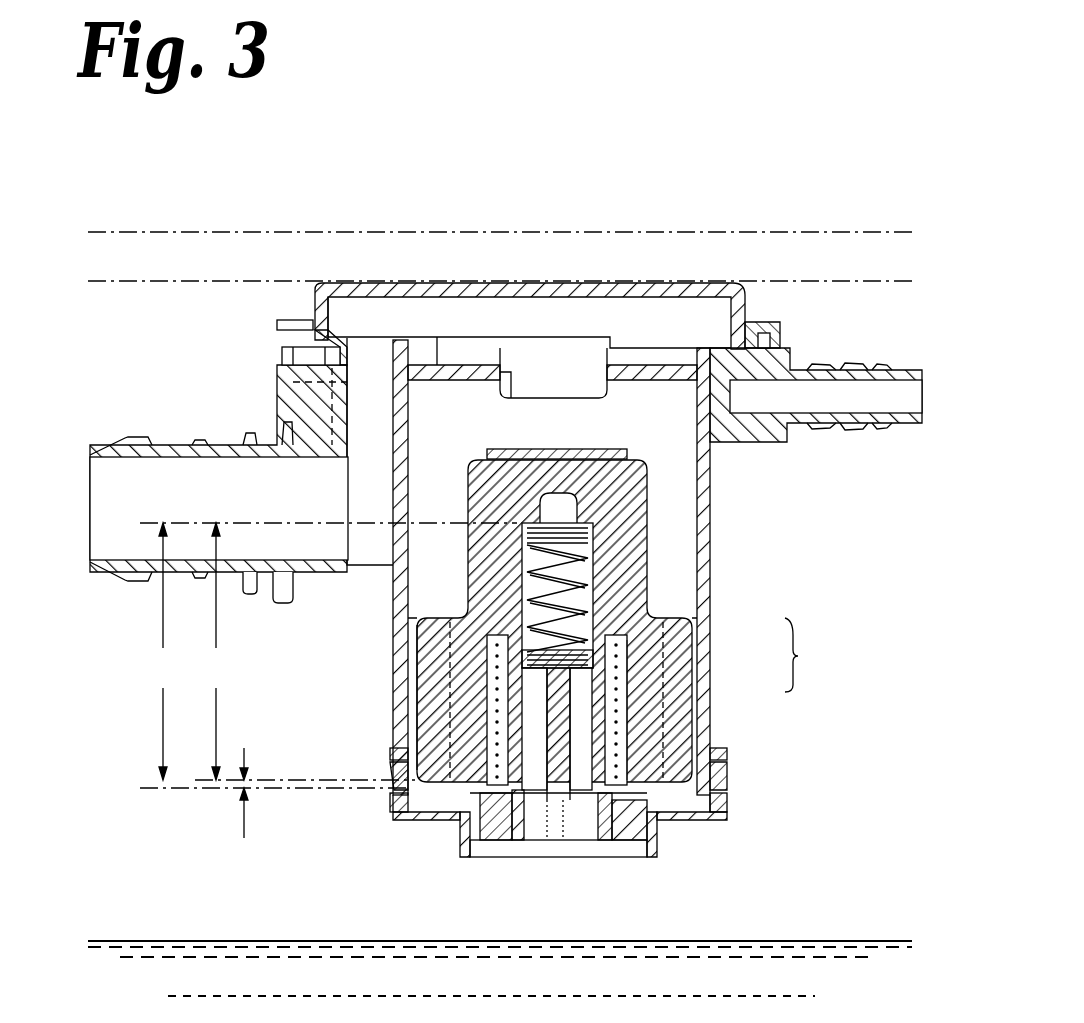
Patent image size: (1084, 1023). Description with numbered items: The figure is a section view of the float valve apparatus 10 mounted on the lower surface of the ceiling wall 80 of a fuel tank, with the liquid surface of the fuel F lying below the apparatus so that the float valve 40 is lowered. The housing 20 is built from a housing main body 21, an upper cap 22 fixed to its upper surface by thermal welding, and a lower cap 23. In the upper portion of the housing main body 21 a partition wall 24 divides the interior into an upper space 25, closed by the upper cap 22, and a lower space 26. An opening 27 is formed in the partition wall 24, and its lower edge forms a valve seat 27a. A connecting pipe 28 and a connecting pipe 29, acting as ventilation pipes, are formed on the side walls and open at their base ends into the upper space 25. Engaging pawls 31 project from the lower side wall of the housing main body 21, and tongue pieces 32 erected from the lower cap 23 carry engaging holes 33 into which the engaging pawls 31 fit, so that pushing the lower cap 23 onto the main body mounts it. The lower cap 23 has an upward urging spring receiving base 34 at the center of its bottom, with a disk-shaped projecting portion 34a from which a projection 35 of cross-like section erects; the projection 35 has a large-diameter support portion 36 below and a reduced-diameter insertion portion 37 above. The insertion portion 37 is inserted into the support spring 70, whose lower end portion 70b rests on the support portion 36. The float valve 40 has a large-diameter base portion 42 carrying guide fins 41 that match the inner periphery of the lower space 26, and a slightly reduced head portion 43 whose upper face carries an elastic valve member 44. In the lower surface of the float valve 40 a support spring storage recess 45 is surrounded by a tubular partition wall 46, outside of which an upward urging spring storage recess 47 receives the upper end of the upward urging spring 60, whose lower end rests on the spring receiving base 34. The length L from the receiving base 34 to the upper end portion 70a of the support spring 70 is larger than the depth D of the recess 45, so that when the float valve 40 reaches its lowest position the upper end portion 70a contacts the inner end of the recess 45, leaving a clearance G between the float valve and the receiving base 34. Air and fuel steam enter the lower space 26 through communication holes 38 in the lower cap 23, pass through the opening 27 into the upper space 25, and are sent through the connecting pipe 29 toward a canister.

The float valve apparatus 10 is at (248, 345).
The housing 20 is at (727, 535).
The housing main body 21 is at (713, 580).
The upper cap 22 is at (745, 290).
The lower cap 23 is at (680, 822).
The partition wall 24 is at (641, 385).
The upper space 25 is at (601, 312).
The lower space 26 is at (377, 577).
The opening 27 is at (510, 375).
The valve seat 27a is at (497, 400).
The connecting pipe 28 is at (848, 366).
The connecting pipe 29 is at (187, 443).
The engaging pawl 31 is at (402, 780).
The tongue piece 32 is at (405, 758).
The engaging hole 33 is at (400, 803).
The upward urging spring receiving base 34 is at (478, 793).
The disk-shaped projecting portion 34a is at (518, 793).
The projection 35 is at (808, 655).
The support portion 36 is at (640, 692).
The insertion portion 37 is at (640, 648).
The communication hole 38 is at (652, 805).
The float valve 40 is at (650, 513).
The guide fin 41 is at (418, 632).
The base portion 42 is at (475, 650).
The head portion 43 is at (466, 495).
The valve member 44 is at (561, 449).
The support spring storage recess 45 is at (527, 557).
The partition wall 46 is at (496, 660).
The upward urging spring storage recess 47 is at (496, 688).
The upward urging spring 60 is at (650, 718).
The support spring 70 is at (604, 545).
The upper end portion 70a is at (580, 515).
The lower end portion 70b is at (520, 660).
The ceiling wall 80 is at (237, 232).
The length L is at (158, 651).
The depth D is at (213, 651).
The clearance G is at (236, 793).
The fuel F is at (162, 947).